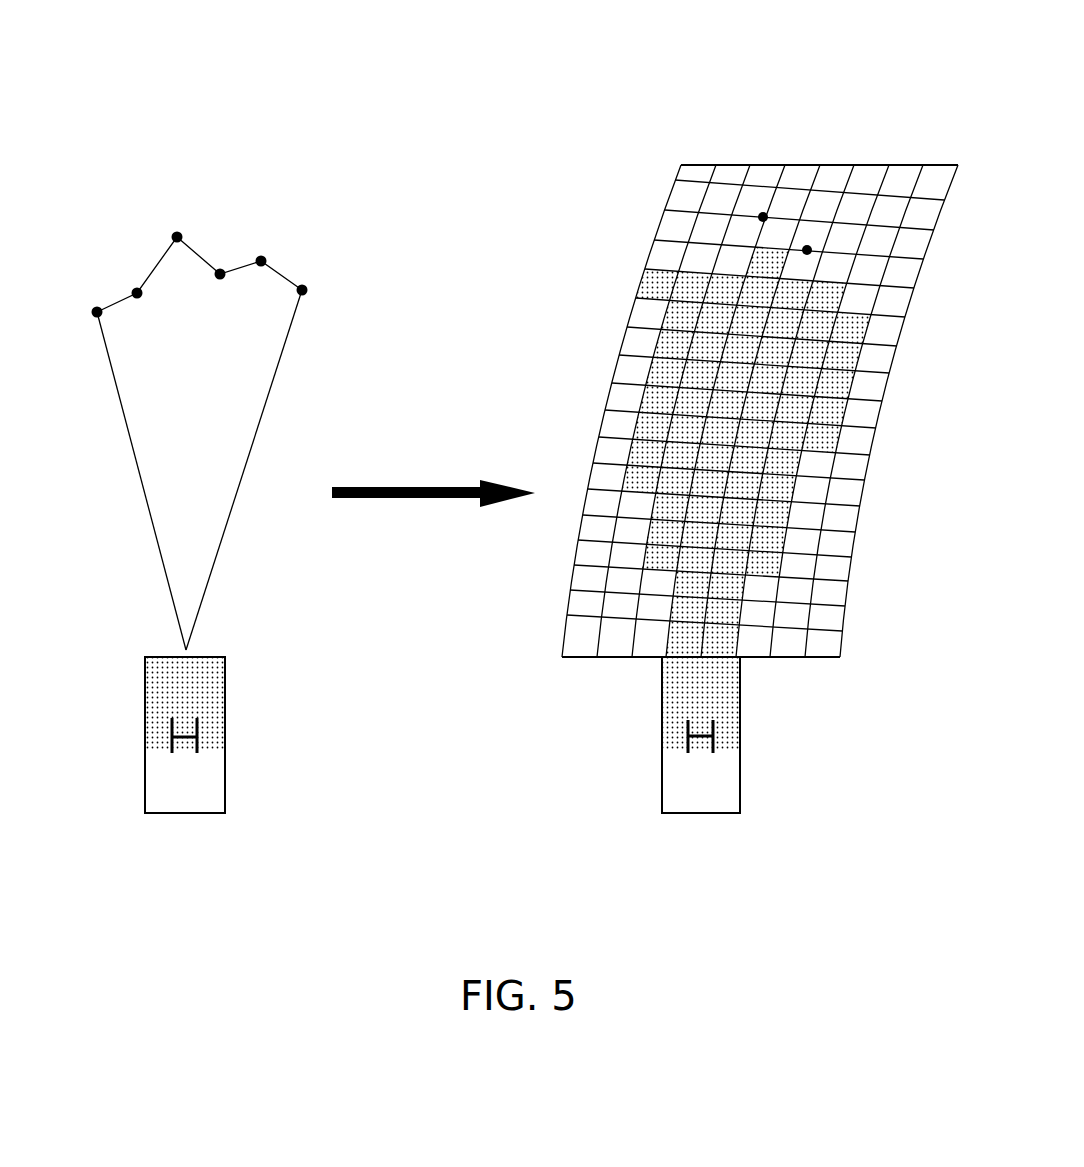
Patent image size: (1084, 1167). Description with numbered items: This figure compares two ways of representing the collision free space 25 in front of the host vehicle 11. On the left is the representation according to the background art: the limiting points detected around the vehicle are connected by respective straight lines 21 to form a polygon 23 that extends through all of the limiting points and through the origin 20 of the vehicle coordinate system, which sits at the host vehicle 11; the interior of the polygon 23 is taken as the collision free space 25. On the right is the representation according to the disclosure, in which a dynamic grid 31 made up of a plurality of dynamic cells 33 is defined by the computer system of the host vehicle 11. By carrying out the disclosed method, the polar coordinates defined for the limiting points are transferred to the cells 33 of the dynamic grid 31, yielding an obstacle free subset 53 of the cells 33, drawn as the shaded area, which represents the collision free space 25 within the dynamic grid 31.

The host vehicle 11 is at (215, 807).
The origin of the vehicle coordinate system 20 is at (197, 470).
The straight lines 21 is at (197, 250).
The polygon 23 is at (140, 487).
The collision free space 25 is at (220, 315).
The dynamic grid 31 is at (760, 335).
The dynamic cells 33 is at (738, 173).
The obstacle free subset 53 is at (700, 394).